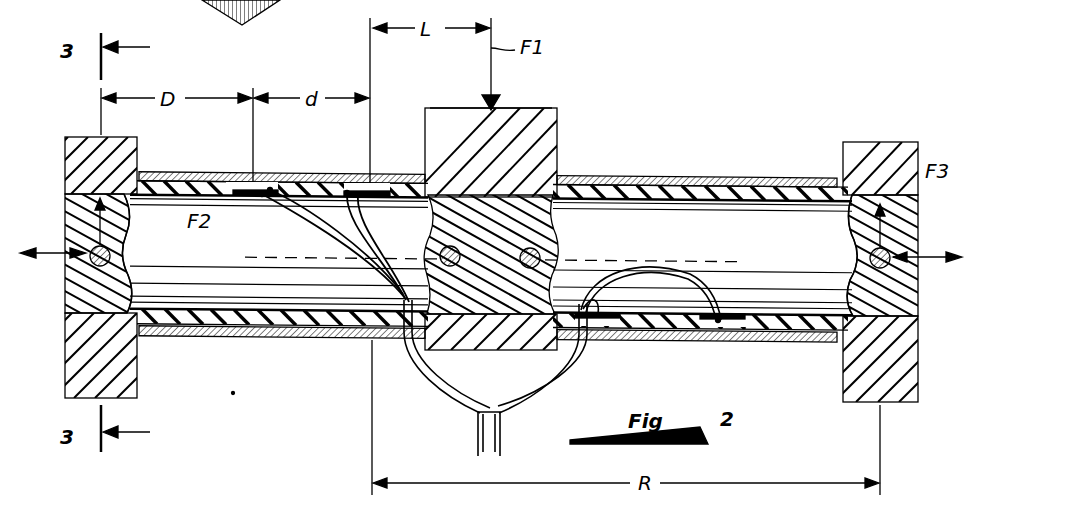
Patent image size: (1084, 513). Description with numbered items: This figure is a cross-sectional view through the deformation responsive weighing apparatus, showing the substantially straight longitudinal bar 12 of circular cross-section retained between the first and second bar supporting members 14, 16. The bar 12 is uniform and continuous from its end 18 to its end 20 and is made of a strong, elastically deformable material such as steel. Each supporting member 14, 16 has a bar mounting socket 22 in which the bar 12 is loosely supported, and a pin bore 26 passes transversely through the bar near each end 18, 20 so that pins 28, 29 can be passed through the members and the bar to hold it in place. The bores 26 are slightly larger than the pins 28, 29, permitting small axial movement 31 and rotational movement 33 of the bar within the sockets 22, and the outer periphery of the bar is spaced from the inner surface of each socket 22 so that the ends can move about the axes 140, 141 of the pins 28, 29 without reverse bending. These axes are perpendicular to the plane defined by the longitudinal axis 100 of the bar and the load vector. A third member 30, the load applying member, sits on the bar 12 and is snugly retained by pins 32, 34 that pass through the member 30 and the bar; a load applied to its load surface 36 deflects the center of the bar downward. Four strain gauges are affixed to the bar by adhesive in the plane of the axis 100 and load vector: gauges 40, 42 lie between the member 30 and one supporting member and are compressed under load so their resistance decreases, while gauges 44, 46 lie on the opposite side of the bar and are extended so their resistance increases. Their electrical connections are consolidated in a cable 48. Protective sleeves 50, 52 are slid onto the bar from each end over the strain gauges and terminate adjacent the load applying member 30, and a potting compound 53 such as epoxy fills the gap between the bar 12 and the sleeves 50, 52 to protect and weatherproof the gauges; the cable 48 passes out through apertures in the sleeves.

The longitudinal bar 12 is at (498, 268).
The first bar supporting member 14 is at (66, 140).
The second bar supporting member 16 is at (843, 152).
The end of bar 18 is at (65, 209).
The end of bar 20 is at (905, 210).
The bar mounting socket 22 is at (65, 195).
The pin bore 26 is at (118, 262).
The pin 28 is at (117, 250).
The pin 29 is at (868, 257).
The third member 30 is at (557, 120).
The axial movement 31 is at (92, 259).
The pin 32 is at (440, 256).
The rotational movement 33 is at (491, 238).
The pin 34 is at (540, 257).
The load surface 36 is at (466, 108).
The strain gauge 40 is at (262, 193).
The strain gauge 42 is at (358, 188).
The strain gauge 44 is at (610, 328).
The strain gauge 46 is at (732, 328).
The cable 48 is at (500, 428).
The protective sleeve 50 is at (265, 337).
The protective sleeve 52 is at (706, 328).
The potting compound 53 is at (357, 326).
The longitudinal axis 100 is at (707, 257).
The axis 140 is at (72, 255).
The axis 141 is at (852, 270).